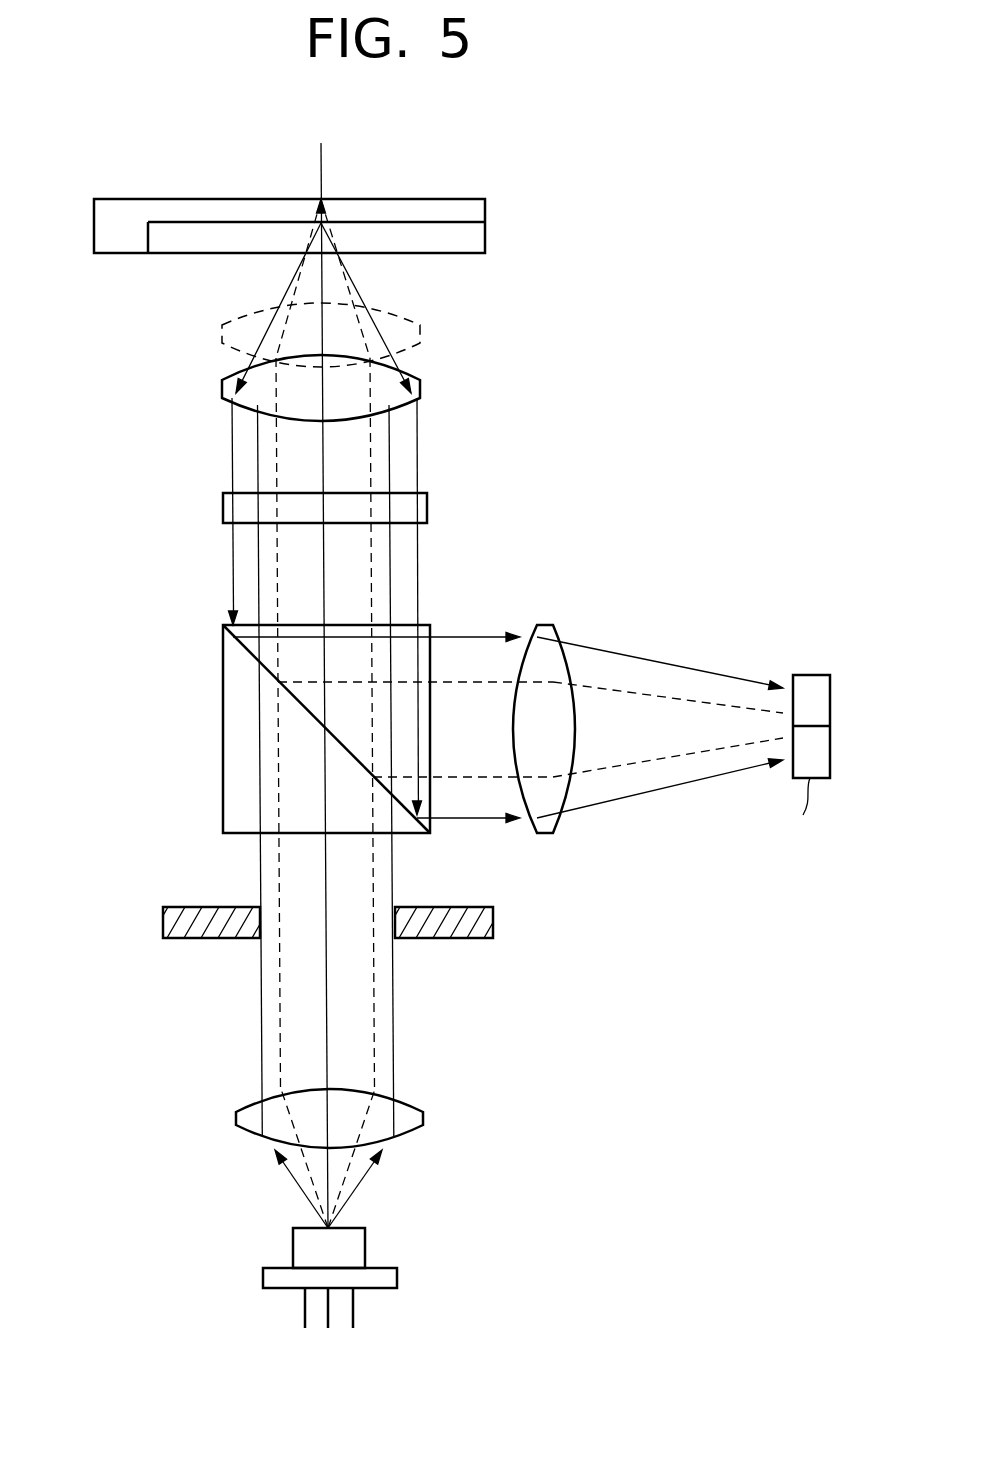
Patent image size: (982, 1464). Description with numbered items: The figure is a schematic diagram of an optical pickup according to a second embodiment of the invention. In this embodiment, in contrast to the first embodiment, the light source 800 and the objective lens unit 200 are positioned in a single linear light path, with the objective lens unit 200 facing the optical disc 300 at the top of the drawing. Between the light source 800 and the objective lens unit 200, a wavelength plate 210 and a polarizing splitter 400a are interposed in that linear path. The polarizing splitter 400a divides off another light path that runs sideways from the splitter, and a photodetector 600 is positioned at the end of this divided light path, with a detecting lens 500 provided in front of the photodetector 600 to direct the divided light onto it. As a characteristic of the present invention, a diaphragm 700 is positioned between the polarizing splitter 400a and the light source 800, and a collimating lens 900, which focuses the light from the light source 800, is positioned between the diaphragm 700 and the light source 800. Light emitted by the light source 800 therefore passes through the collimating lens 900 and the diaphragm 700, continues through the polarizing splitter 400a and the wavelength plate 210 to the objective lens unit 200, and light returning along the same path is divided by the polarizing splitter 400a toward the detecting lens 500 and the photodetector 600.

The optical disc 300 is at (465, 185).
The objective lens unit 200 is at (420, 392).
The wavelength plate 210 is at (223, 503).
The polarizing splitter 400a is at (223, 654).
The detecting lens 500 is at (541, 625).
The photodetector 600 is at (808, 675).
The diaphragm 700 is at (493, 922).
The collimating lens 900 is at (423, 1120).
The light source 800 is at (365, 1248).